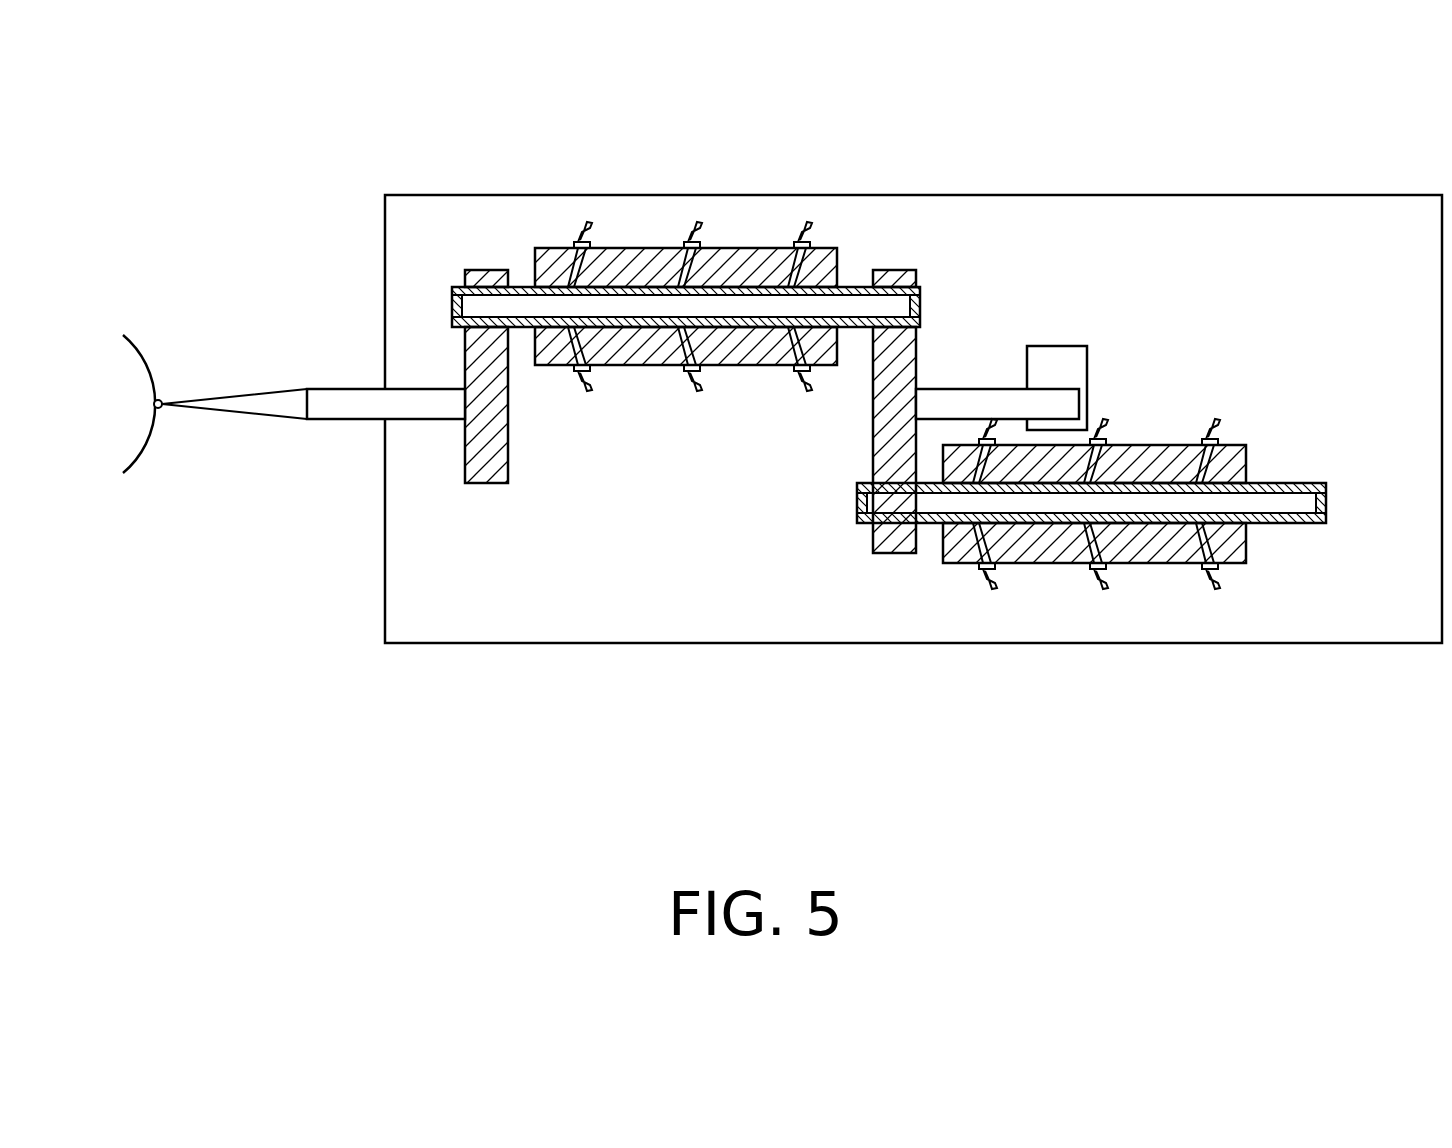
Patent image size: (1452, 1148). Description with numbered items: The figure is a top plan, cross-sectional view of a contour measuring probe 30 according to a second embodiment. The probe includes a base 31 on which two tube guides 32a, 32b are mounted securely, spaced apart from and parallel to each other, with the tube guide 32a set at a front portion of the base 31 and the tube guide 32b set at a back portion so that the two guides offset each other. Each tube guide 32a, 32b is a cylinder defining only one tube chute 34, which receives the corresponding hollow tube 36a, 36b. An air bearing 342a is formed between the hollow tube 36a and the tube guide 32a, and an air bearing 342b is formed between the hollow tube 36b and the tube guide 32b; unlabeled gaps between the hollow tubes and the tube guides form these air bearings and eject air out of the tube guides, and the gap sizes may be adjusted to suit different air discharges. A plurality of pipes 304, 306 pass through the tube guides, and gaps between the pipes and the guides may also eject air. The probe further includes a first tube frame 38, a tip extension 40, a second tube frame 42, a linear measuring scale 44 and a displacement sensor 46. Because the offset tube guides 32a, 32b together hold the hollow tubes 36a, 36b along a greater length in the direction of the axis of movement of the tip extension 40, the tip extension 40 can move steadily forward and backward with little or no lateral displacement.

The contour measuring probe 30 is at (782, 385).
The base 31 is at (457, 232).
The pipe 304 is at (572, 257).
The pipe 306 is at (678, 353).
The tube guide 32a is at (686, 240).
The tube guide 32b is at (1151, 584).
The air bearing 342a is at (753, 287).
The air bearing 342b is at (1242, 540).
The tube chute 34 is at (889, 419).
The hollow tube 36a is at (920, 298).
The hollow tube 36b is at (860, 503).
The first tube frame 38 is at (475, 367).
The tip extension 40 is at (362, 403).
The second tube frame 42 is at (885, 392).
The linear measuring scale 44 is at (1058, 403).
The displacement sensor 46 is at (1084, 422).